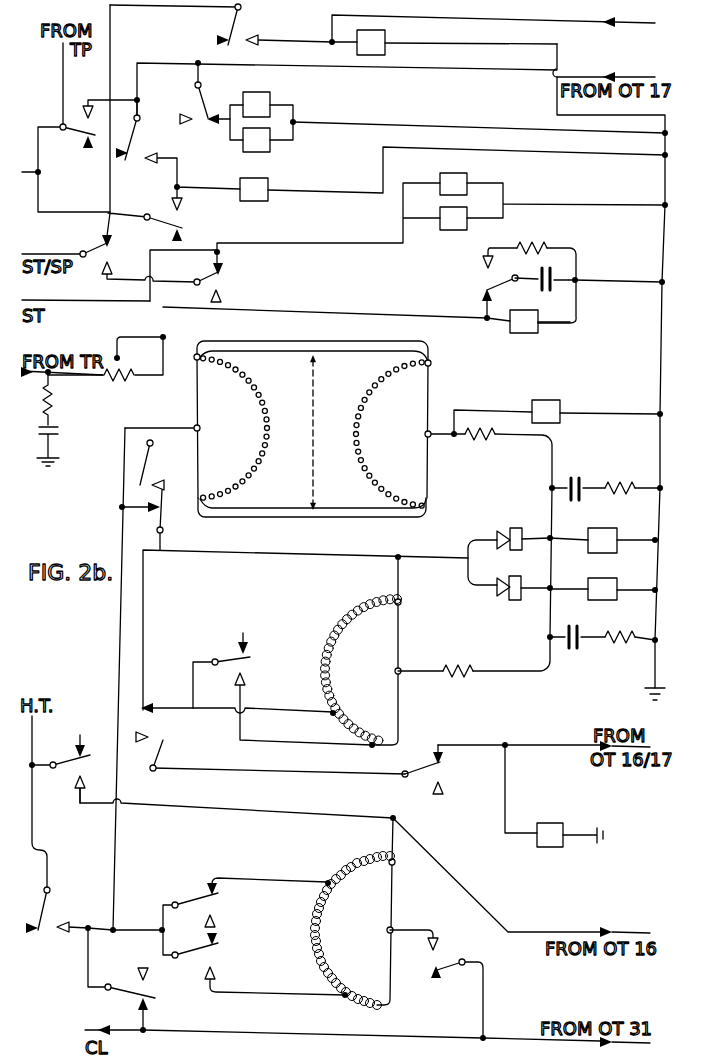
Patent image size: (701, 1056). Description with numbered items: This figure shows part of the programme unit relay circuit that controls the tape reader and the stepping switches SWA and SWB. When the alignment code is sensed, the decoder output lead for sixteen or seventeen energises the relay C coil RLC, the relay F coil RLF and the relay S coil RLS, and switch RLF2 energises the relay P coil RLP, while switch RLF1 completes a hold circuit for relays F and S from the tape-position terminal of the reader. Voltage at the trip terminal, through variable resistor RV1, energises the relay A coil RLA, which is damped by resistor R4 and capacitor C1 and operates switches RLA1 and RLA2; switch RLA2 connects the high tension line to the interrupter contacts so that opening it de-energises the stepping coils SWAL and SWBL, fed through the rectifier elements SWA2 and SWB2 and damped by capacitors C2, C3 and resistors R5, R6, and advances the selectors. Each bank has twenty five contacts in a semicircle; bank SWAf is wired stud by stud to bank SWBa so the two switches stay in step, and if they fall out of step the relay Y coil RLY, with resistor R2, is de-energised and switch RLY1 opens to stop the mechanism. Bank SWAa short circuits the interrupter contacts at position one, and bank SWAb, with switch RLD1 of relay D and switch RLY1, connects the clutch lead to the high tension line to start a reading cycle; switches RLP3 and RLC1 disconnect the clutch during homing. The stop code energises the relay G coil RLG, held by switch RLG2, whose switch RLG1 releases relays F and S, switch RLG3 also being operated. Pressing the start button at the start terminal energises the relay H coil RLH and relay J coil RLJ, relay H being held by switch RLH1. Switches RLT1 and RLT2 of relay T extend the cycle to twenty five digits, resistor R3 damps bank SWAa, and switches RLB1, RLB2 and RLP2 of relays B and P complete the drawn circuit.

The relay F switch F1 RLF1 is at (74, 168).
The relay G switch G2 RLG2 is at (221, 24).
The relay G coil RLG is at (450, 36).
The relay G switch G1 RLG1 is at (190, 93).
The relay F coil RLF is at (320, 90).
The relay S coil RLS is at (320, 167).
The relay F switch F2 RLF2 is at (161, 153).
The relay P coil RLP is at (315, 214).
The relay P switch P2 RLP2 is at (186, 226).
The relay H switch H1 RLH1 is at (138, 262).
The relay G switch G3 RLG3 is at (241, 275).
The relay H coil RLH is at (530, 174).
The relay J coil RLJ is at (392, 216).
The resistor R4 is at (529, 271).
The relay A switch A1 RLA1 is at (472, 294).
The capacitor C1 is at (588, 290).
The relay A coil RLA is at (540, 358).
The variable resistor RV1 is at (107, 369).
The contact bank SWAf is at (305, 430).
The contact bank SWBa is at (404, 438).
The relay B switch B1 RLB1 is at (169, 495).
The relay Y coil RLY is at (615, 396).
The resistor R2 is at (503, 458).
The capacitor C2 is at (577, 479).
The resistor R5 is at (632, 476).
The rectifier element SWB2 is at (516, 529).
The stepping coil SWBL is at (602, 530).
The rectifier element SWA2 is at (514, 599).
The stepping coil SWAL is at (602, 600).
The capacitor C3 is at (576, 649).
The resistor R6 is at (630, 651).
The relay T switch T1 RLT1 is at (282, 679).
The contact bank SWAa is at (365, 652).
The resistor R3 is at (474, 672).
The relay C coil RLC is at (568, 873).
The relay B switch B2 RLB2 is at (173, 751).
The relay D switch D1 RLD1 is at (70, 765).
The relay A switch A2 RLA2 is at (62, 910).
The relay C switch C1 RLC1 is at (243, 915).
The relay T switch T2 RLT2 is at (276, 981).
The contact bank SWAb is at (358, 912).
The relay Y switch Y1 RLY1 is at (439, 984).
The relay P switch P3 RLP3 is at (112, 999).